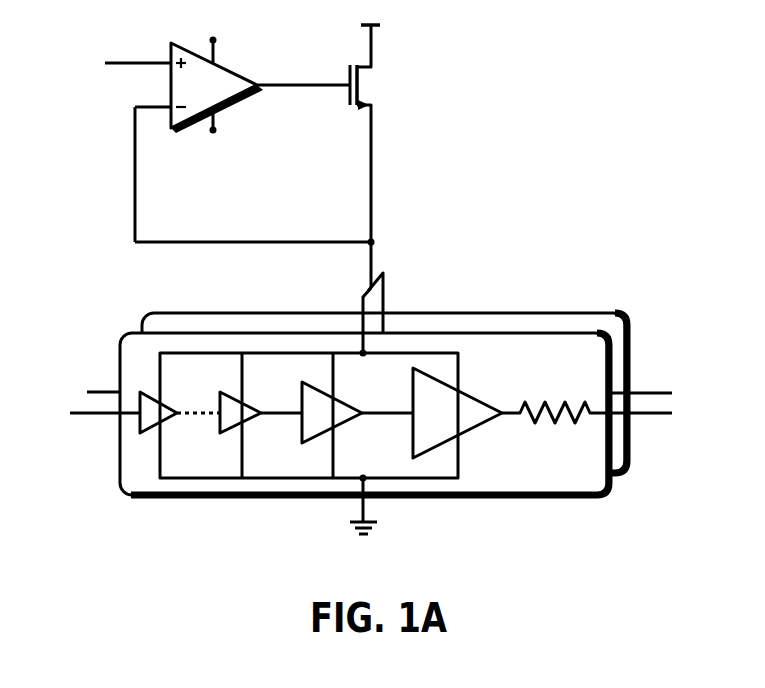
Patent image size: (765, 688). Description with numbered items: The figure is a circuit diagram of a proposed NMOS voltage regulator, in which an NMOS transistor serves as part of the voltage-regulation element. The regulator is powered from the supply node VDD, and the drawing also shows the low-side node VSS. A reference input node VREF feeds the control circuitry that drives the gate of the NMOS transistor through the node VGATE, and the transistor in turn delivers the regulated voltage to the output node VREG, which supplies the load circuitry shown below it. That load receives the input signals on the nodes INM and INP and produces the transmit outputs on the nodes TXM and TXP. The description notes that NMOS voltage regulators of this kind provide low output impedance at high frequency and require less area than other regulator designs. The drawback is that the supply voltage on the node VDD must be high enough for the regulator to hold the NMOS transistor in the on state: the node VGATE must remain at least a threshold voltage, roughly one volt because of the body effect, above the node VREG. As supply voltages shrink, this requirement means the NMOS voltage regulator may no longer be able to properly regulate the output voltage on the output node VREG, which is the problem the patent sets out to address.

The supply voltage node VDD is at (326, 37).
The VSS supply node VSS is at (319, 323).
The VREF node VREF is at (103, 63).
The gate node VGATE is at (303, 73).
The output node VREG is at (404, 196).
The negative input signal INM is at (80, 383).
The positive input signal INP is at (83, 420).
The negative transmit output TXM is at (668, 393).
The positive transmit output TXP is at (612, 416).